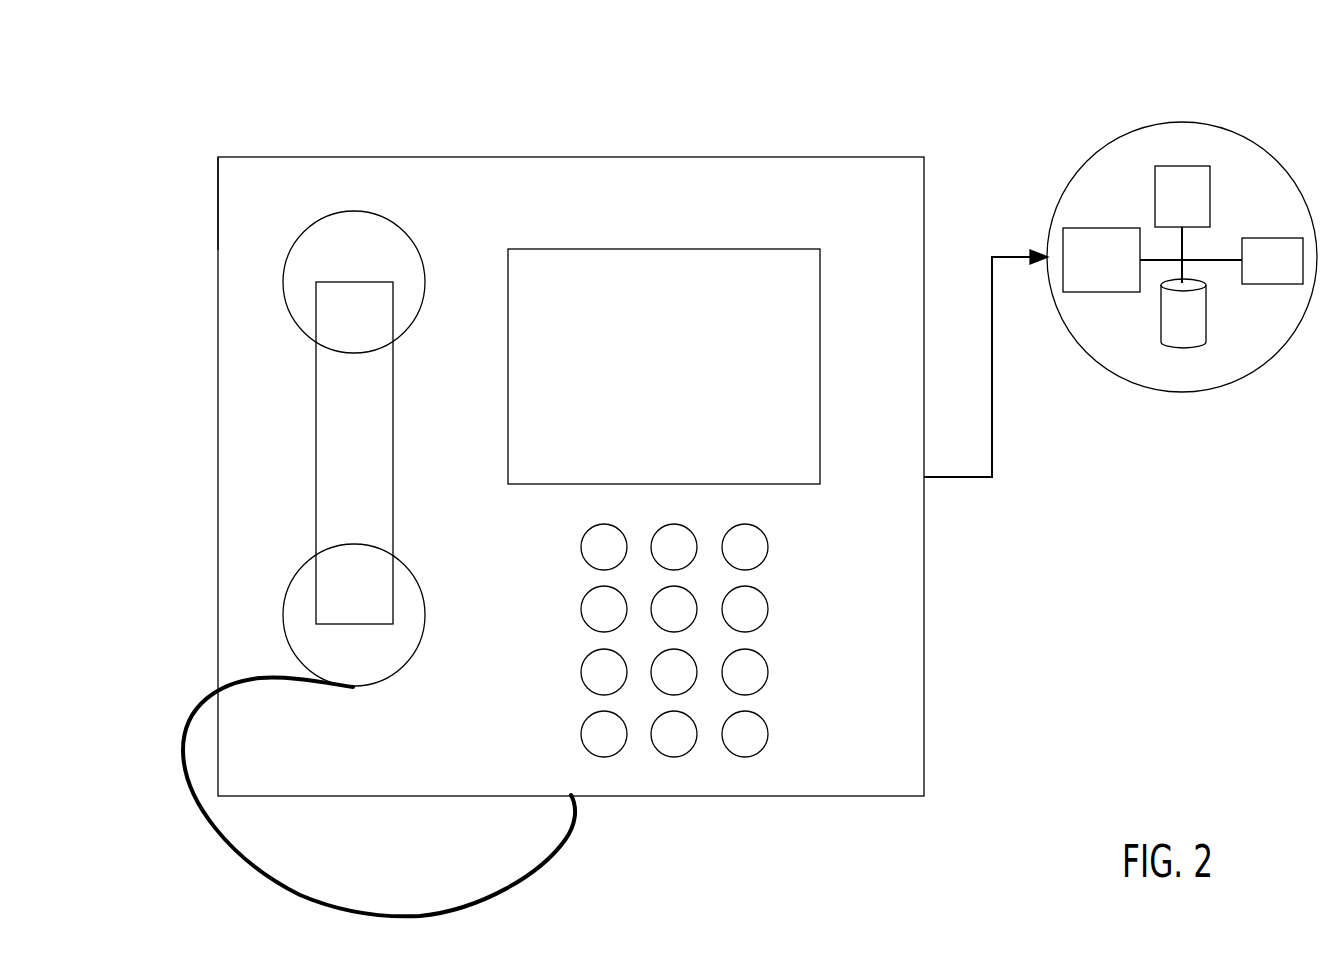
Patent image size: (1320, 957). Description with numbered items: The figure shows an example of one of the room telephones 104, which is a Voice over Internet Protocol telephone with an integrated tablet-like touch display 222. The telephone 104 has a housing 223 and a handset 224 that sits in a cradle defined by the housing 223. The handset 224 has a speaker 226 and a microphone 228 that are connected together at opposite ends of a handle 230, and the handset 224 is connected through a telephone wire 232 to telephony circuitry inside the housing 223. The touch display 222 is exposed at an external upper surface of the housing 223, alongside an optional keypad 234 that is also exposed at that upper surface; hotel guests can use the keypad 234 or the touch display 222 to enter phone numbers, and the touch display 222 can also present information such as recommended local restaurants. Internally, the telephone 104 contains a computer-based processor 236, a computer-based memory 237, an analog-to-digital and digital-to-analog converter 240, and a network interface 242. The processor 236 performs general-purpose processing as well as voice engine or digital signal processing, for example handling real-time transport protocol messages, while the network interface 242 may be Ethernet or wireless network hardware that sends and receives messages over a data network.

The room telephone 104 is at (1007, 94).
The touch display 222 is at (780, 253).
The housing 223 is at (675, 158).
The handset 224 is at (269, 245).
The speaker 226 is at (382, 215).
The microphone 228 is at (430, 592).
The handle 230 is at (393, 398).
The telephone wire 232 is at (555, 886).
The keypad 234 is at (782, 577).
The processor 236 is at (1182, 196).
The memory 237 is at (1183, 313).
The analog-to-digital and digital-to-analog converter 240 is at (1101, 260).
The network interface 242 is at (1272, 261).